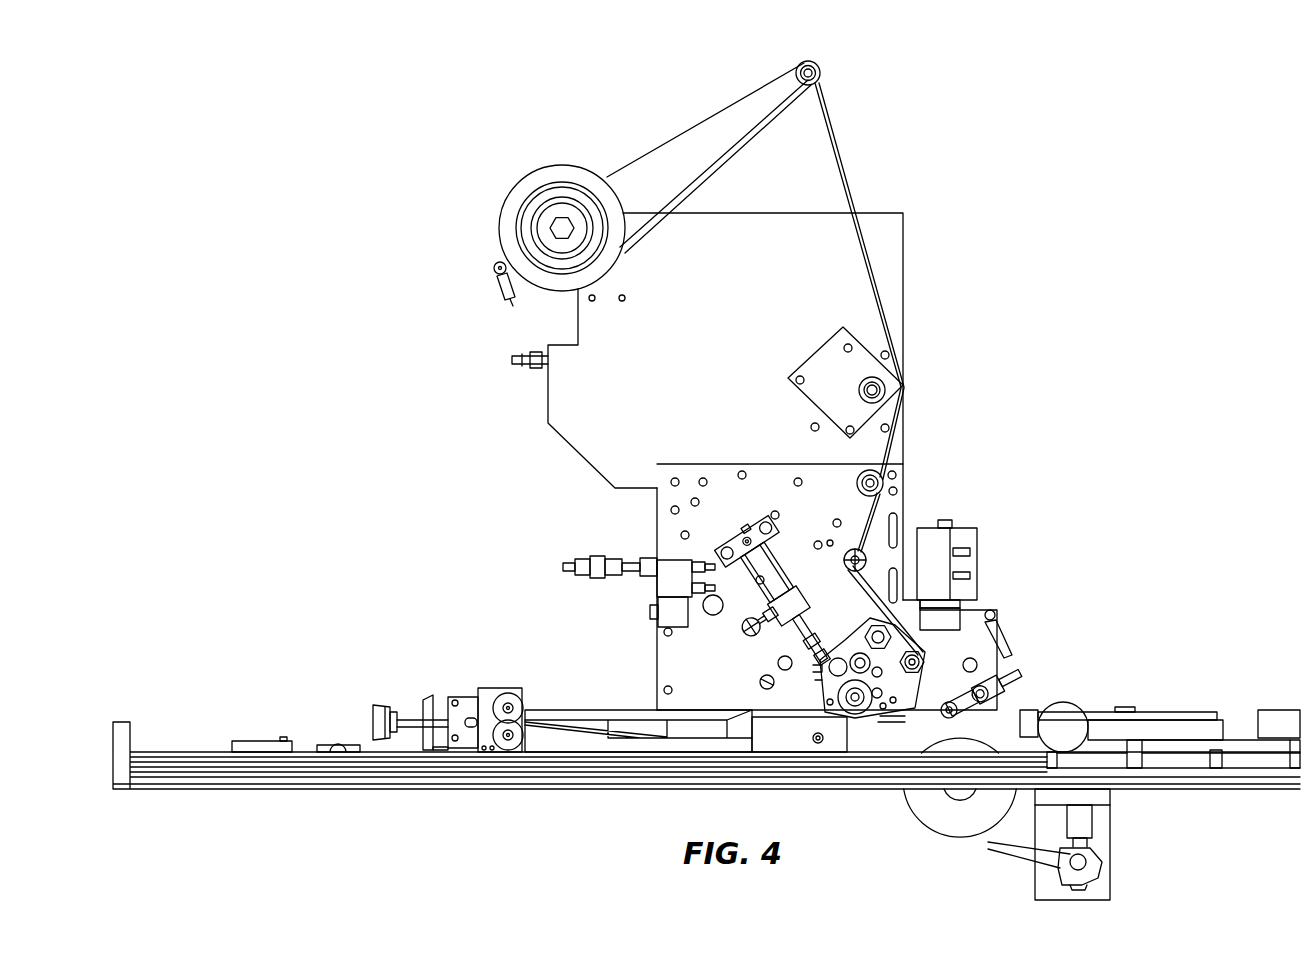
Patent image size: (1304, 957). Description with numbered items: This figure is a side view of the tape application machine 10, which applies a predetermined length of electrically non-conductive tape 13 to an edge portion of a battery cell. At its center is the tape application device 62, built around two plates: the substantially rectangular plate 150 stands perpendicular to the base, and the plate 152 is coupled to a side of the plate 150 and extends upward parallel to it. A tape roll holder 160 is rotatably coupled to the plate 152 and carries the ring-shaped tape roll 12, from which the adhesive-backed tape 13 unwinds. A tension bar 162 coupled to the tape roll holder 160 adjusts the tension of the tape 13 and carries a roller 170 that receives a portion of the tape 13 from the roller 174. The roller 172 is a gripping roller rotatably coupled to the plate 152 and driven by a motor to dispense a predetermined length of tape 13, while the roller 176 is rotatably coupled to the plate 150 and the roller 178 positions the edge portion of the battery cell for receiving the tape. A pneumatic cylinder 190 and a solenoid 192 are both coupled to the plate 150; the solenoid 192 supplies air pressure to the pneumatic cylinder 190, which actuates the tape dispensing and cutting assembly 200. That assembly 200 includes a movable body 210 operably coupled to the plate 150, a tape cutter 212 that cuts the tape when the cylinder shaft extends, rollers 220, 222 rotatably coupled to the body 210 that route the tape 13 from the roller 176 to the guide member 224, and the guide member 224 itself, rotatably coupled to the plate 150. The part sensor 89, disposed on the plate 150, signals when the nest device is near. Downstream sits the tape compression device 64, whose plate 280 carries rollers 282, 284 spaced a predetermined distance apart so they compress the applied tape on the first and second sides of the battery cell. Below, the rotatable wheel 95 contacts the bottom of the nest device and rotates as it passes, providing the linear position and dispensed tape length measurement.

The tape application machine 10 is at (1012, 216).
The tape roll 12 is at (545, 175).
The electrically non-conductive tape 13 is at (837, 141).
The tape application device 62 is at (568, 708).
The tape compression device 64 is at (533, 686).
The part sensor 89 is at (942, 560).
The rotatable wheel 95 is at (930, 827).
The plate 150 is at (673, 510).
The plate 152 is at (562, 398).
The tape roll holder 160 is at (545, 227).
The tension bar 162 is at (675, 137).
The roller 170 is at (820, 66).
The roller 172 is at (900, 400).
The roller 174 is at (857, 487).
The roller 176 is at (850, 569).
The roller 178 is at (1002, 672).
The pneumatic cylinder 190 is at (787, 572).
The solenoid 192 is at (667, 585).
The tape dispensing and cutting assembly 200 is at (820, 668).
The movable body 210 is at (850, 655).
The tape cutter 212 is at (817, 710).
The roller 220 is at (920, 652).
The roller 222 is at (903, 695).
The guide member 224 is at (897, 703).
The plate 280 is at (490, 698).
The roller 282 is at (503, 712).
The roller 284 is at (508, 748).